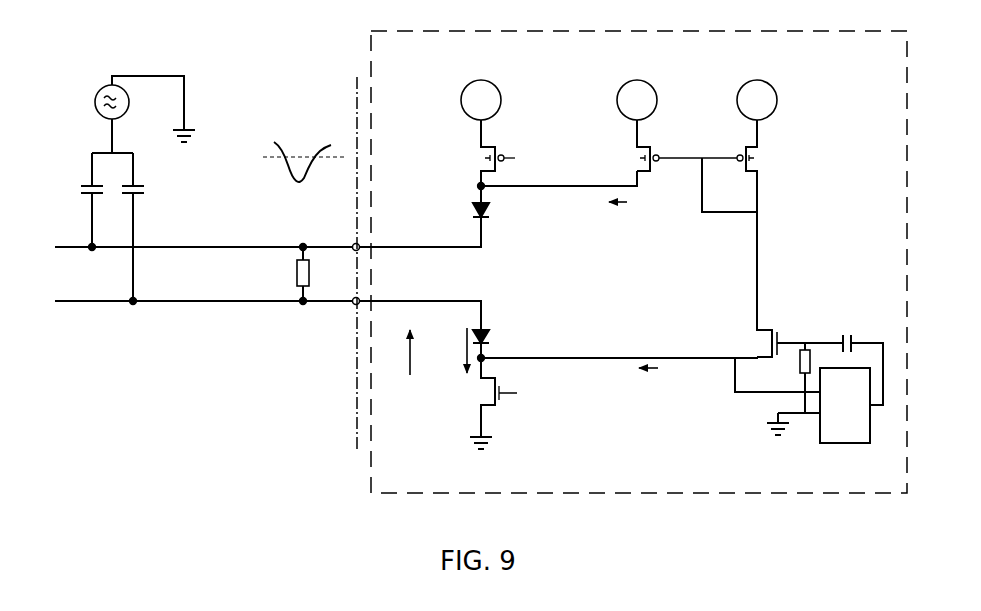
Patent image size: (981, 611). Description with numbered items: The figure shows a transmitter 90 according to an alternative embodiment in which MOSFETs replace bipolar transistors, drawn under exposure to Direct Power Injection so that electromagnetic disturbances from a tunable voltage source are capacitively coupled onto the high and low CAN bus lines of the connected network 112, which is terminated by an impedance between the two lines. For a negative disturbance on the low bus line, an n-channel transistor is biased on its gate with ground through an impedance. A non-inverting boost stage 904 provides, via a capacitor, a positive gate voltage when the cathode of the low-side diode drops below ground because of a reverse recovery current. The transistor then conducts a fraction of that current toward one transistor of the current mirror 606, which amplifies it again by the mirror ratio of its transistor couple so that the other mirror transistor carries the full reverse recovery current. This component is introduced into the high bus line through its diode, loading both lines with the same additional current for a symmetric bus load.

The CAN bus network 112 is at (240, 330).
The transmitter 90 is at (633, 289).
The current mirror 606 is at (718, 65).
The non-inverting boost stage 904 is at (838, 443).